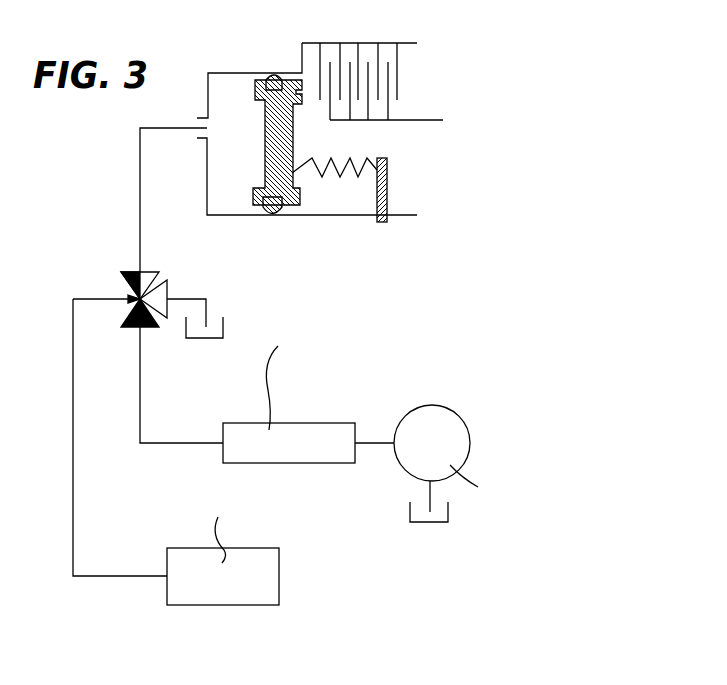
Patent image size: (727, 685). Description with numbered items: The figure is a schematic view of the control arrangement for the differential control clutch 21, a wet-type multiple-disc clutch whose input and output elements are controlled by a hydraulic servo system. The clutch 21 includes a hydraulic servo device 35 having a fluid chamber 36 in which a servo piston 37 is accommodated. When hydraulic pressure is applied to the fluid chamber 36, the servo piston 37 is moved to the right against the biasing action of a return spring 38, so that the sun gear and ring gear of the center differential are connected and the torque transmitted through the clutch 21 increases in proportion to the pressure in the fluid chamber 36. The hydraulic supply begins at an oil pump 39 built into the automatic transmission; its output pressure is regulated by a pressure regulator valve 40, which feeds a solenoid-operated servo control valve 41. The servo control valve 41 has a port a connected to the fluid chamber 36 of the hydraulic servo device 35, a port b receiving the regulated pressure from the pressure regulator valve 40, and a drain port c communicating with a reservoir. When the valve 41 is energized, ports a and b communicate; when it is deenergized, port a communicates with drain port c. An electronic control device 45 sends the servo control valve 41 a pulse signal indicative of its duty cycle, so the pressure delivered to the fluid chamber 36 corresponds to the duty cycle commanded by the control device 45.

The differential control clutch 21 is at (370, 43).
The fluid chamber 36 is at (224, 84).
The hydraulic servo device 35 is at (232, 218).
The servo piston 37 is at (291, 205).
The return spring 38 is at (350, 165).
The solenoid-operated servo control valve 41 is at (159, 320).
The pressure regulator valve 40 is at (305, 423).
The oil pump 39 is at (467, 432).
The electronic control device 45 is at (272, 575).